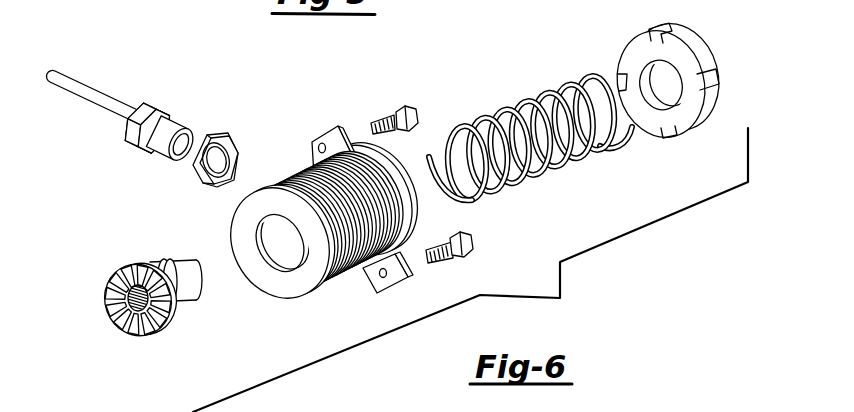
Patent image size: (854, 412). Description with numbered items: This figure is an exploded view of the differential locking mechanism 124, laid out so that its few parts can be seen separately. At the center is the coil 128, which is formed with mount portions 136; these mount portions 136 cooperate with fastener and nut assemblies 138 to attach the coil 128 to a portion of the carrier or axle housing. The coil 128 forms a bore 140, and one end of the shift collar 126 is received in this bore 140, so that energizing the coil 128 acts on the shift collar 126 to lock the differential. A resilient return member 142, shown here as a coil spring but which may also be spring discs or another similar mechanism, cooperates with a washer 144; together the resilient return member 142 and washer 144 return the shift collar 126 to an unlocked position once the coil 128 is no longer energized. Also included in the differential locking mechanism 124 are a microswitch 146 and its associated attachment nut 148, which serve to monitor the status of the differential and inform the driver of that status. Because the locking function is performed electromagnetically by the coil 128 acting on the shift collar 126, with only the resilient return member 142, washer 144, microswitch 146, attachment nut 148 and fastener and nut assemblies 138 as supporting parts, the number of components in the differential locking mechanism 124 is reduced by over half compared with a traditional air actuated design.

The differential locking mechanism 124 is at (470, 270).
The shift collar 126 is at (143, 265).
The coil 128 is at (323, 199).
The mount portions 136 is at (312, 143).
The fastener and nut assemblies 138 is at (395, 108).
The bore 140 is at (280, 250).
The resilient return member 142 is at (580, 153).
The washer 144 is at (713, 57).
The microswitch 146 is at (153, 104).
The attachment nut 148 is at (211, 133).